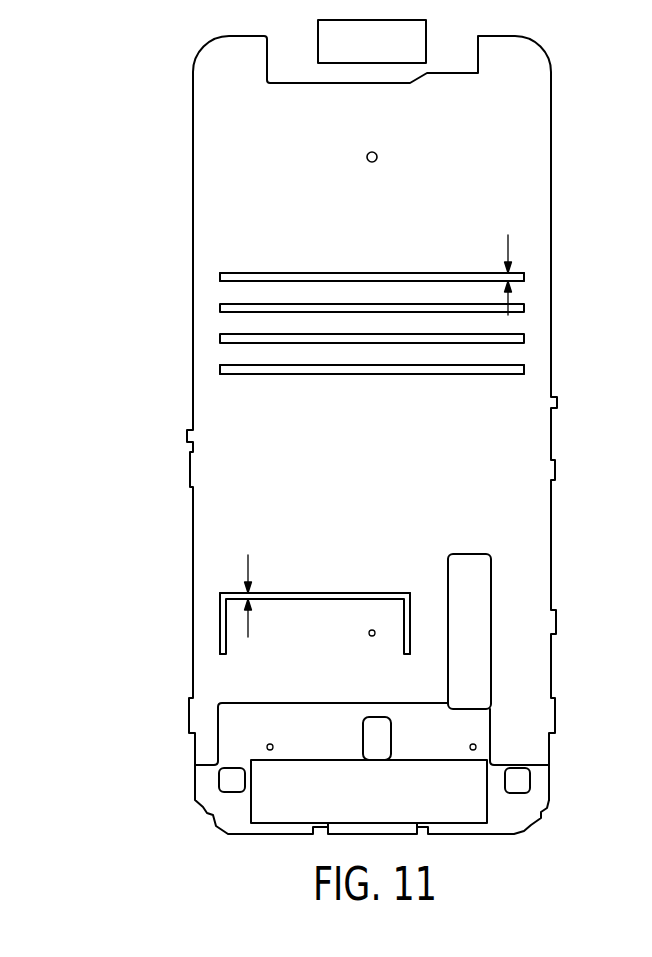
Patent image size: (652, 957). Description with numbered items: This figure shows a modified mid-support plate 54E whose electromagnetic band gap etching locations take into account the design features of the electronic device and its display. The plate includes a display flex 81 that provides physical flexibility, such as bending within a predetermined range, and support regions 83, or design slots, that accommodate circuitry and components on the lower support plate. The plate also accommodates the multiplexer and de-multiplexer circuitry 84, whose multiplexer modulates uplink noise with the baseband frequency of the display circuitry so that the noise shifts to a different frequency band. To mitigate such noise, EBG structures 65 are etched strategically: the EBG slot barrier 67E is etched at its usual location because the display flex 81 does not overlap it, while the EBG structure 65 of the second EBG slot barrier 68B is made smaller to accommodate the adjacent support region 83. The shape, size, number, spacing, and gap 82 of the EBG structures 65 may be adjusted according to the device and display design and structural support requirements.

The modified mid-support plate 54E is at (193, 157).
The EBG structure 65 is at (303, 277).
The gap 82 is at (508, 246).
The EBG slot barrier 67E is at (185, 262).
The second EBG slot barrier 68B is at (185, 583).
The support region 83 is at (477, 642).
The display flex 81 is at (235, 818).
The multiplexer and de-multiplexer circuitry 84 is at (272, 822).